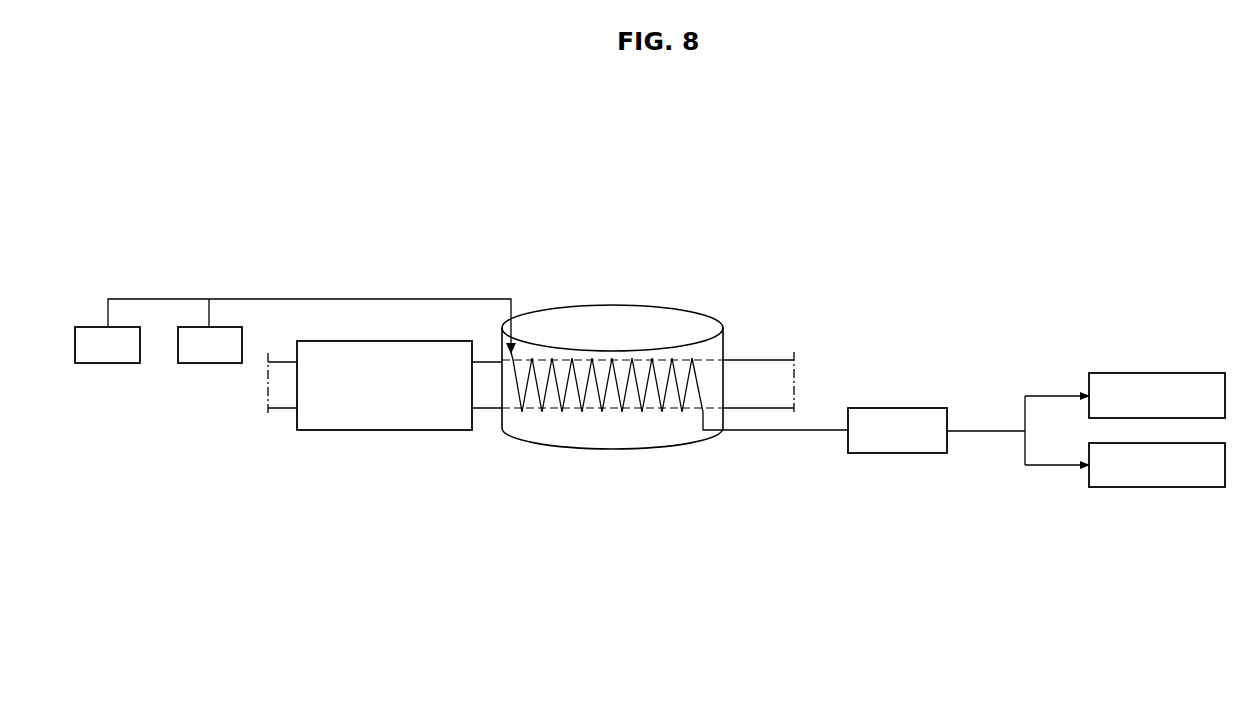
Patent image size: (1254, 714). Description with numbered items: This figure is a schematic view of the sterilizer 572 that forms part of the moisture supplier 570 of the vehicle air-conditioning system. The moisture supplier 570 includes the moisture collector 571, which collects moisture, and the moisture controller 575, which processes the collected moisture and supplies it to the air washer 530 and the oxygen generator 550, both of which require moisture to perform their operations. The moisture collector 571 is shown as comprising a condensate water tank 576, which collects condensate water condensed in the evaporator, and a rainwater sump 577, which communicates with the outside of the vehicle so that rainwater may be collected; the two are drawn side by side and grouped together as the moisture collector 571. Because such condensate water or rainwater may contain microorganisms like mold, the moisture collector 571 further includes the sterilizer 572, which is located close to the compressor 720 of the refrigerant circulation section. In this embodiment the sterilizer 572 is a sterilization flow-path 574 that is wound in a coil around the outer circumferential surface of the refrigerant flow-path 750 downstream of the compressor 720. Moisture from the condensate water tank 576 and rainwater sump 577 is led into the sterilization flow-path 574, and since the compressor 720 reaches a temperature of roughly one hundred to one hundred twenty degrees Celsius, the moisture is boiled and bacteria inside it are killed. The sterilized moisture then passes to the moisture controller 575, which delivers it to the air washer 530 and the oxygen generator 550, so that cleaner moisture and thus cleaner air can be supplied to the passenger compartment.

The moisture supplier 570 is at (652, 495).
The moisture collector 571 is at (149, 420).
The sterilizer 572 is at (632, 295).
The sterilization flow-path 574 is at (623, 408).
The moisture controller 575 is at (896, 442).
The condensate water tank 576 is at (106, 358).
The rainwater sump 577 is at (213, 358).
The compressor 720 is at (383, 422).
The refrigerant flow-path 750 is at (757, 369).
The air washer 530 is at (1160, 386).
The oxygen generator 550 is at (1161, 475).